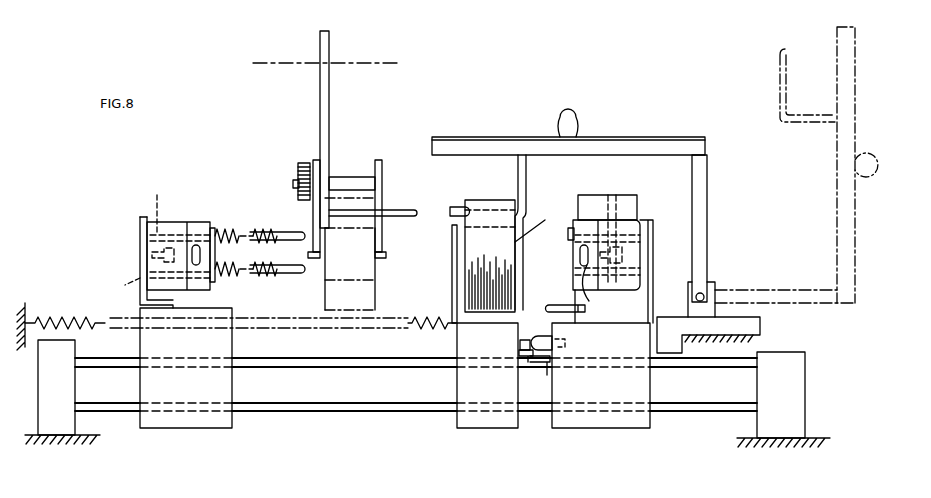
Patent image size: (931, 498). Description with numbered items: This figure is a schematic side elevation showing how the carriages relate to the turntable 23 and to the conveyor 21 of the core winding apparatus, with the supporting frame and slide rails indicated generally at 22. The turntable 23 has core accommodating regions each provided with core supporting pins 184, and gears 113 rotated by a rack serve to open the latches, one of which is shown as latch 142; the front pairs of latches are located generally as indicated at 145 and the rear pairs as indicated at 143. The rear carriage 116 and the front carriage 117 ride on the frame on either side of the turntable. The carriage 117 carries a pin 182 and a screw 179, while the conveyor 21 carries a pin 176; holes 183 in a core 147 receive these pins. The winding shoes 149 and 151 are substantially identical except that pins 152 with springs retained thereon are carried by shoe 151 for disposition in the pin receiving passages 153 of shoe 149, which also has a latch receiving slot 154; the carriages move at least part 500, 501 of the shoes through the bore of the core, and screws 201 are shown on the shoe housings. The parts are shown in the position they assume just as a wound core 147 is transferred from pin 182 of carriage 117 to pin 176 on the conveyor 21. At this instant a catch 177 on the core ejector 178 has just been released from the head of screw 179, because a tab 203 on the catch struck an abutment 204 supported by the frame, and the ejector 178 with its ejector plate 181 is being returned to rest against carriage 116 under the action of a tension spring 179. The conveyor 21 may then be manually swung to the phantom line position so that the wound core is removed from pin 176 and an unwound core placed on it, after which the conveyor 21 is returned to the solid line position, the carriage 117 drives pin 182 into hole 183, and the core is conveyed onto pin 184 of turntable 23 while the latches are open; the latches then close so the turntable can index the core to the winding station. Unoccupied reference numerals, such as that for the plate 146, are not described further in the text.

The conveyor 21 is at (668, 142).
The base frame with rails 22 is at (371, 427).
The turntable 23 is at (326, 102).
The gears 113 is at (296, 174).
The rear carriage 116 is at (213, 418).
The carriage 117 is at (618, 420).
The latch 142 is at (318, 158).
The rear pairs of latches location 143 is at (286, 154).
The front pairs of latches location 145 is at (370, 154).
The horizontal plate 146 is at (344, 178).
The core 147 is at (377, 295).
The winding shoe 149 is at (634, 223).
The winding shoe 151 is at (170, 222).
The pins 152 is at (278, 232).
The pin receiving passages 153 is at (568, 239).
The latch receiving slot 154 is at (589, 301).
The pin 176 is at (456, 207).
The catch 177 is at (526, 340).
The core ejector 178 is at (492, 420).
The screw / tension spring 179 is at (62, 313).
The ejector plate 181 is at (452, 258).
The pin 182 is at (556, 304).
The holes 183 is at (482, 199).
The pins 184 is at (397, 207).
The screws 201 is at (660, 268).
The tab 203 is at (518, 355).
The abutment 204 is at (548, 368).
The part of winding shoe 500 is at (214, 230).
The part of winding shoe 501 is at (573, 226).